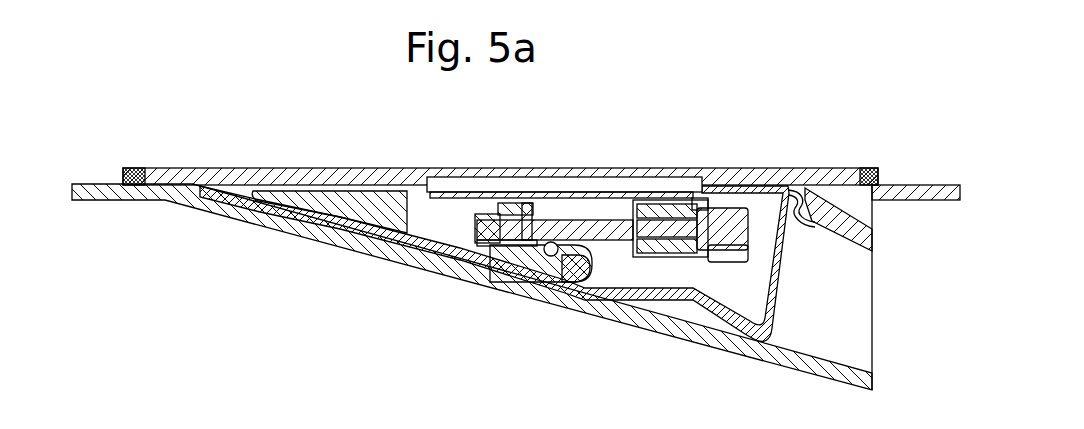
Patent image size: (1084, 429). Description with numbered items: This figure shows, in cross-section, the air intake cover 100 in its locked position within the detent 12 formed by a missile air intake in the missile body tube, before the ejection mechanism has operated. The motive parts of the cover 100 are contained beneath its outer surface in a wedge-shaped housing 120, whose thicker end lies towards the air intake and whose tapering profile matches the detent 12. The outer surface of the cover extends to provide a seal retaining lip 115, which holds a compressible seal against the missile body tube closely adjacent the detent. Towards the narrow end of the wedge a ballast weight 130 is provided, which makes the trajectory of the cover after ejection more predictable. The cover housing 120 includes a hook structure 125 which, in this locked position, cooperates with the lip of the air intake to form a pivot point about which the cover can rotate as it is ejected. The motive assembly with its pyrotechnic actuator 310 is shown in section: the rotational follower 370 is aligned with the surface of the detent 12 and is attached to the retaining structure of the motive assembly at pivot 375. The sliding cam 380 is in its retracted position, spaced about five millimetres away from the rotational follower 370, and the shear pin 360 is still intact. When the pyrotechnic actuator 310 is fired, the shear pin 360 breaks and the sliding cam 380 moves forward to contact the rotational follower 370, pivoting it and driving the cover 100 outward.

The detent 12 is at (813, 310).
The cover 100 is at (287, 135).
The seal retaining lip 115 is at (128, 168).
The housing 120 is at (723, 312).
The hook structure 125 is at (803, 210).
The ballast weight 130 is at (337, 200).
The pyrotechnic actuator 310 is at (693, 205).
The shear pin 360 is at (510, 207).
The rotational follower 370 is at (517, 263).
The pivot 375 is at (565, 272).
The sliding cam 380 is at (600, 212).